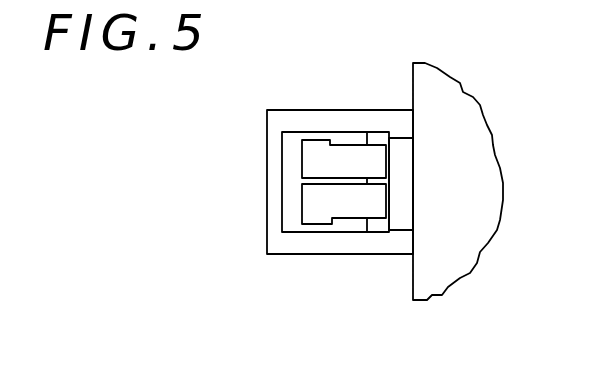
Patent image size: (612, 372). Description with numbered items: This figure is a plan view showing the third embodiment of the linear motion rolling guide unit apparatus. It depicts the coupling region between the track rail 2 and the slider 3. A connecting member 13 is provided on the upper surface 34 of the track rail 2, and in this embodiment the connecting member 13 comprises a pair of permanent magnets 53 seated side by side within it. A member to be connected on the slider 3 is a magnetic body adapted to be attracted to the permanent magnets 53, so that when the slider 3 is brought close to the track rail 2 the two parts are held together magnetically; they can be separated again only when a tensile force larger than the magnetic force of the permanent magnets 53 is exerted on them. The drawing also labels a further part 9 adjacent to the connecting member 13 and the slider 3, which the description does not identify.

The track rail 2 is at (303, 191).
The slider 3 is at (468, 135).
The mounting portion 9 is at (400, 217).
The connecting member 13 is at (288, 210).
The upper surface 34 is at (280, 243).
The permanent magnets 53 is at (338, 157).